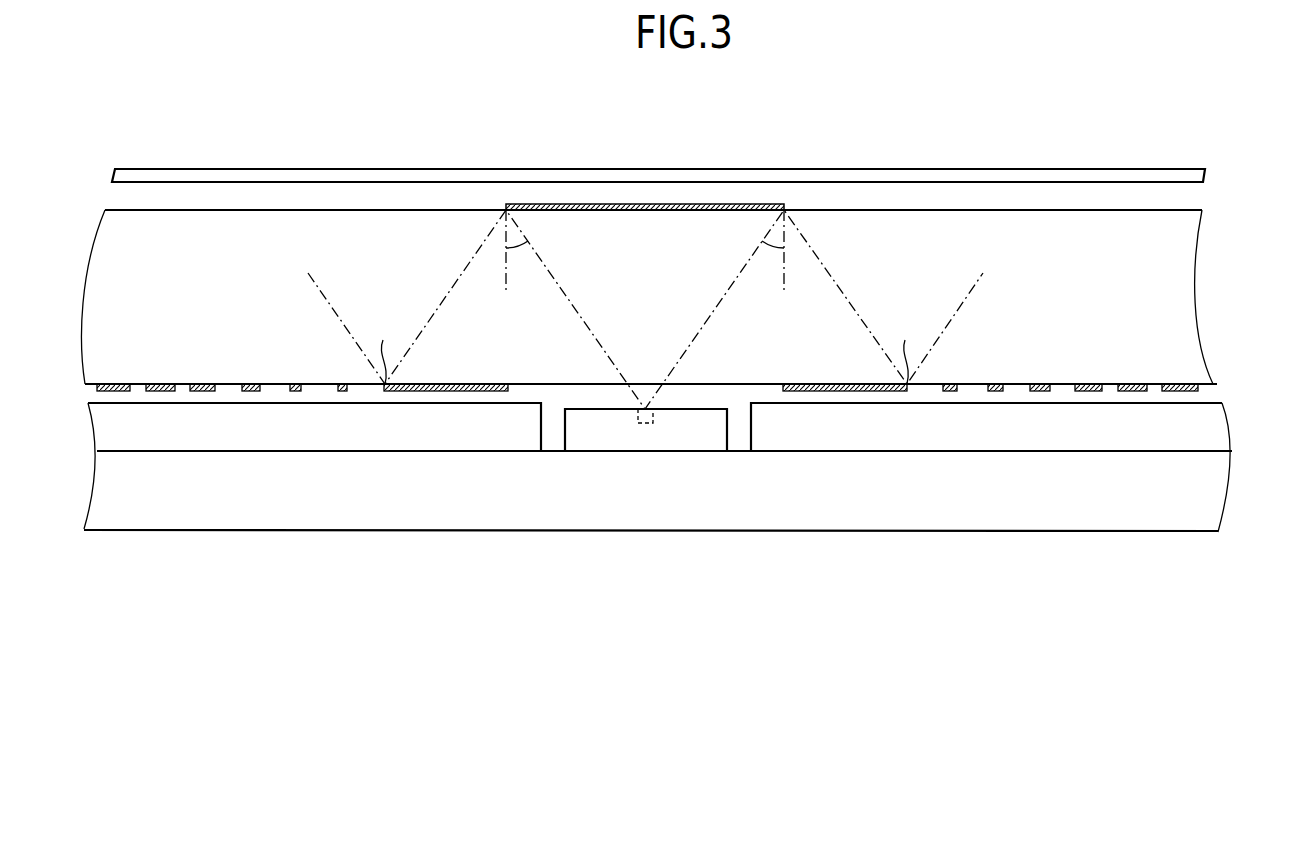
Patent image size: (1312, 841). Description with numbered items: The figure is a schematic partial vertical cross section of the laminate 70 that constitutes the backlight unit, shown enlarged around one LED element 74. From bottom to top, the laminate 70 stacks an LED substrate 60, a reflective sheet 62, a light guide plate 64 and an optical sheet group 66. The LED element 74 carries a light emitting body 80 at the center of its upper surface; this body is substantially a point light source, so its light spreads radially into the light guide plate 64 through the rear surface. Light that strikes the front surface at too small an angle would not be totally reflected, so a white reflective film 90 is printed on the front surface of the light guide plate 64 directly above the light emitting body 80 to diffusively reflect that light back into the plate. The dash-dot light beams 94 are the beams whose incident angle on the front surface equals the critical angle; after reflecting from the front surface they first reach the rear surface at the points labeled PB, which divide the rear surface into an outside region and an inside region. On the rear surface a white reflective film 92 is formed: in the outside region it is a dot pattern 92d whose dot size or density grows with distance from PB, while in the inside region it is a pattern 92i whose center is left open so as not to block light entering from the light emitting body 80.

The laminate 70 is at (1071, 136).
The optical sheet group 66 is at (1196, 176).
The light guide plate 64 is at (1175, 296).
The white reflective film 90 is at (644, 204).
The light beams 94 is at (582, 318).
The white reflective film 92 is at (1183, 397).
The pattern 92i is at (816, 392).
The dot pattern 92d is at (1200, 380).
The reflective sheet 62 is at (1218, 425).
The LED substrate 60 is at (1218, 488).
The LED element 74 is at (565, 437).
The light emitting body 80 is at (653, 415).